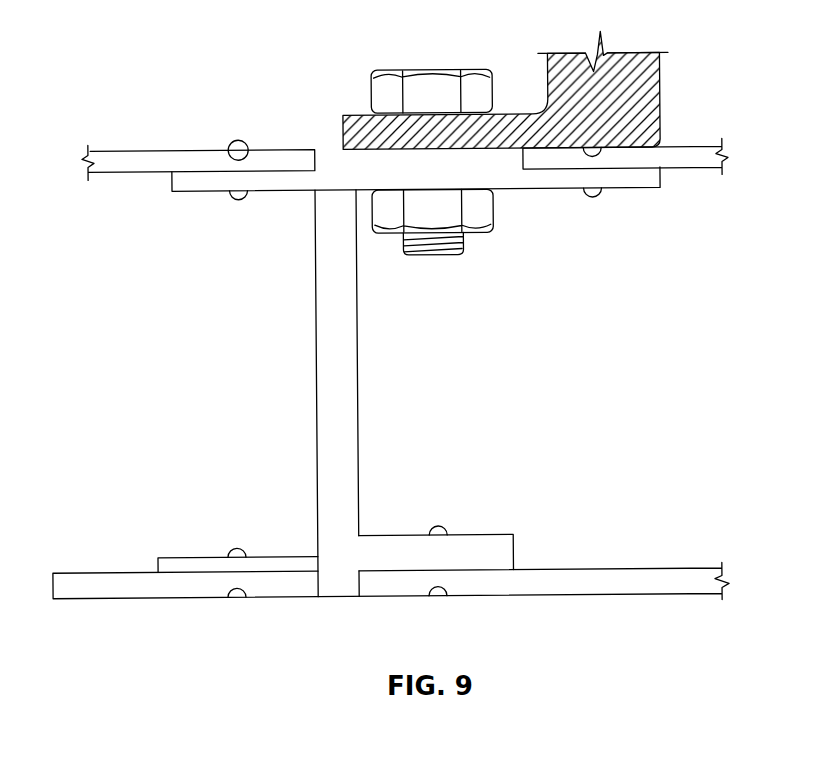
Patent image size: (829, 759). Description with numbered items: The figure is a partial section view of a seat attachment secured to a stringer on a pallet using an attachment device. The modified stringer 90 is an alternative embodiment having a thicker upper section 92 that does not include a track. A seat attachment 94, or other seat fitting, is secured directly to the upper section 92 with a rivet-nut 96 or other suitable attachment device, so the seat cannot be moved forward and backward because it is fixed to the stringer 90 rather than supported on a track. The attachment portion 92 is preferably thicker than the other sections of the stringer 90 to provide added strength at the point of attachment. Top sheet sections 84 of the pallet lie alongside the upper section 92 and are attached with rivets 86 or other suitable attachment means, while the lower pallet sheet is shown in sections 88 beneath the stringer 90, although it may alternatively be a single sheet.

The top sheet sections 84 is at (132, 161).
The rivets 86 is at (242, 147).
The lower pallet sheet sections 88 is at (130, 583).
The modified stringer 90 is at (367, 453).
The upper section 92 is at (485, 171).
The seat attachment 94 is at (650, 102).
The rivet-nut 96 is at (433, 80).